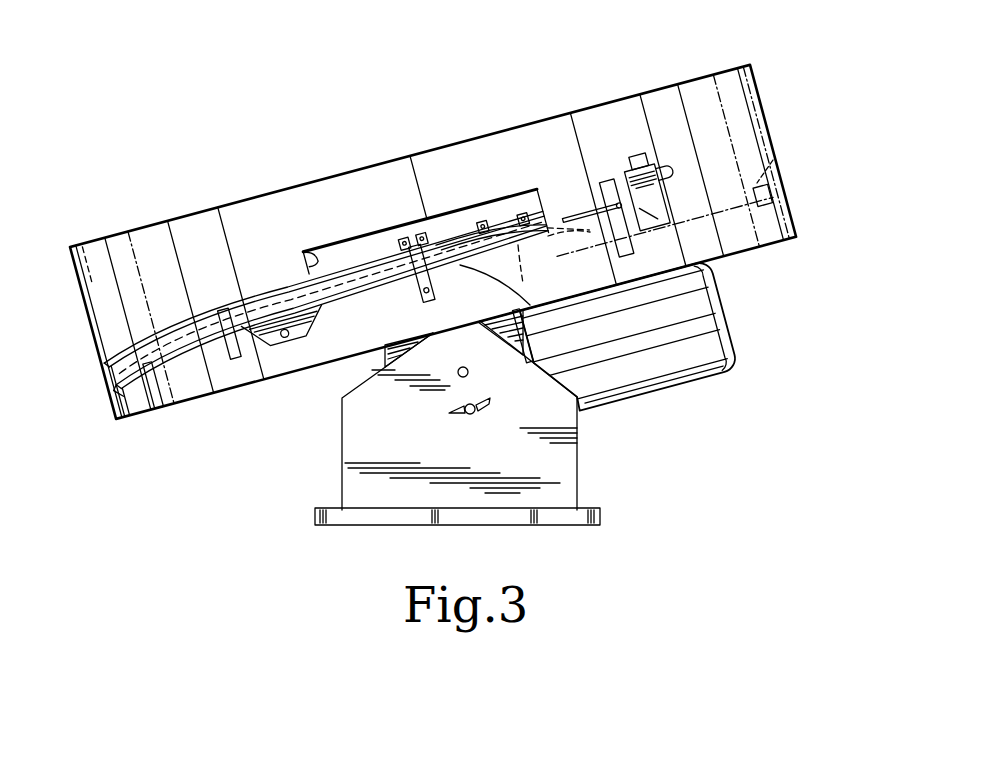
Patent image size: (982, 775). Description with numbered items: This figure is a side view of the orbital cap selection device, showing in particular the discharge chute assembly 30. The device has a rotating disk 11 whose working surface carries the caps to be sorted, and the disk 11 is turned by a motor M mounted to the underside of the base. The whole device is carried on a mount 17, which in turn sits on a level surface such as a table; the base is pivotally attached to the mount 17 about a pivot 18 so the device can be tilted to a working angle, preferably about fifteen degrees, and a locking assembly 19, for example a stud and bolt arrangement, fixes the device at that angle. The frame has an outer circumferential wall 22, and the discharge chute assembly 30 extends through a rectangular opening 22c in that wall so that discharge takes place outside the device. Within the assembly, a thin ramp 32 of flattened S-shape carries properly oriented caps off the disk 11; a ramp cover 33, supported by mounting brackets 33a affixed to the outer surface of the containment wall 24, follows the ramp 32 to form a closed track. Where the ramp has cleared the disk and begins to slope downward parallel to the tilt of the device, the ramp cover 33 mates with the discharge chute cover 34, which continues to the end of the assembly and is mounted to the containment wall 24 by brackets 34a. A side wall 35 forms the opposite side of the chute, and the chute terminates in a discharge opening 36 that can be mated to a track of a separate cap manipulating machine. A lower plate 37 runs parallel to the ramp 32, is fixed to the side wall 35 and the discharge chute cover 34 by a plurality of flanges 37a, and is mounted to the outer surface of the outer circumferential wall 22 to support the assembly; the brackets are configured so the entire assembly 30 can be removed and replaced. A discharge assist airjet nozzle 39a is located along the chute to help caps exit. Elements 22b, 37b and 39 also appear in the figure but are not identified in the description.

The disk 11 is at (771, 160).
The mount 17 is at (348, 476).
The pivot 18 is at (467, 375).
The locking assembly 19 is at (476, 414).
The outer circumferential wall 22 is at (353, 208).
The housing post 22b is at (522, 320).
The rectangular opening 22c is at (313, 250).
The containment wall 24 is at (358, 264).
The discharge chute assembly 30 is at (175, 356).
The ramp 32 is at (72, 341).
The ramp cover 33 is at (503, 228).
The mounting brackets 33a is at (483, 223).
The discharge chute cover 34 is at (137, 335).
The brackets 34a is at (420, 240).
The side wall 35 is at (168, 330).
The discharge opening 36 is at (118, 376).
The lower plate 37 is at (127, 393).
The flanges 37a is at (155, 398).
The bracket 37b is at (283, 345).
The switch 39 is at (640, 246).
The discharge assist airjet nozzle 39a is at (537, 242).
The motor M is at (584, 418).